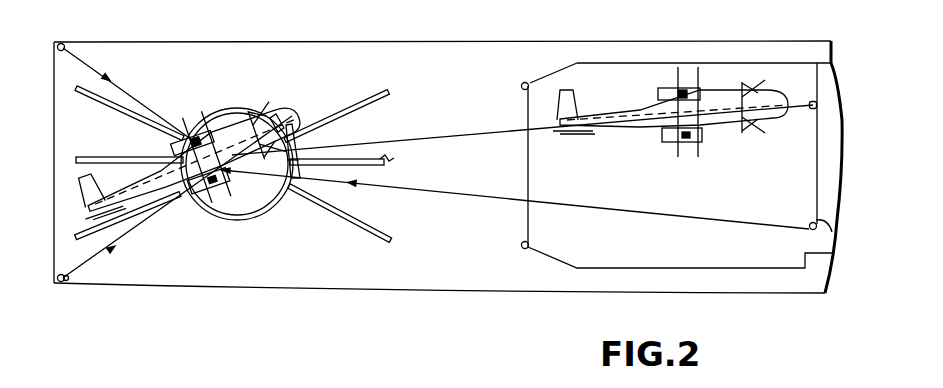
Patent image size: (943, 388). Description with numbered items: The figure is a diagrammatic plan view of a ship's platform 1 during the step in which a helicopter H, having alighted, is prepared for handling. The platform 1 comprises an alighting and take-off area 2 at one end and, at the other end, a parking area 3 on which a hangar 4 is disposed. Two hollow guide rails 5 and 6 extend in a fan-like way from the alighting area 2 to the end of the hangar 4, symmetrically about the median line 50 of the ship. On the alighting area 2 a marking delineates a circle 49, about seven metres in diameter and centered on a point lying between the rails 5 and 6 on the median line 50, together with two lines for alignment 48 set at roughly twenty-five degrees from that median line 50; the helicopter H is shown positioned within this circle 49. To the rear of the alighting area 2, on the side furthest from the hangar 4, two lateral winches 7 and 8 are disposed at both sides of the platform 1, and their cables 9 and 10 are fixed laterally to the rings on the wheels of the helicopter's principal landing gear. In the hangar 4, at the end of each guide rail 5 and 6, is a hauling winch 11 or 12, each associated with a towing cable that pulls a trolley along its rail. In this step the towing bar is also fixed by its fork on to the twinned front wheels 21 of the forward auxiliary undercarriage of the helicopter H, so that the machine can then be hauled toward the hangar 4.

The platform 1 is at (452, 40).
The alighting and take-off area 2 is at (168, 48).
The parking area 3 is at (551, 48).
The hangar 4 is at (694, 63).
The guide rail 5 is at (461, 135).
The guide rail 6 is at (452, 197).
The lateral winch 7 is at (63, 46).
The lateral winch 8 is at (64, 283).
The cable 9 is at (135, 97).
The cable 10 is at (132, 240).
The hauling winch 11 is at (820, 100).
The hauling winch 12 is at (826, 231).
The front wheels 21 is at (272, 118).
The helicopter H is at (283, 113).
The lines for alignment 48 is at (371, 90).
The circle 49 is at (237, 221).
The median line 50 is at (404, 168).